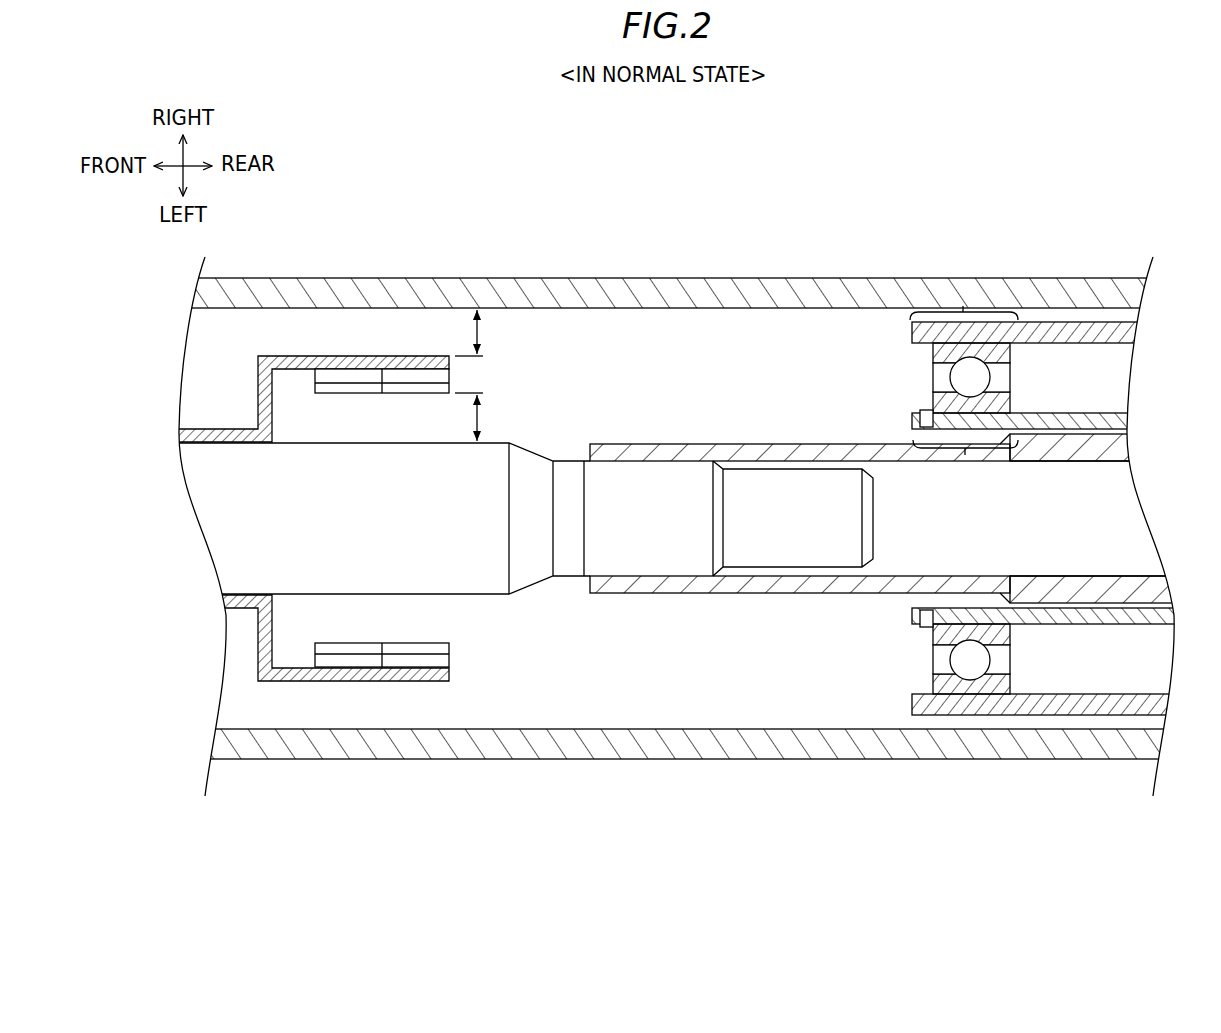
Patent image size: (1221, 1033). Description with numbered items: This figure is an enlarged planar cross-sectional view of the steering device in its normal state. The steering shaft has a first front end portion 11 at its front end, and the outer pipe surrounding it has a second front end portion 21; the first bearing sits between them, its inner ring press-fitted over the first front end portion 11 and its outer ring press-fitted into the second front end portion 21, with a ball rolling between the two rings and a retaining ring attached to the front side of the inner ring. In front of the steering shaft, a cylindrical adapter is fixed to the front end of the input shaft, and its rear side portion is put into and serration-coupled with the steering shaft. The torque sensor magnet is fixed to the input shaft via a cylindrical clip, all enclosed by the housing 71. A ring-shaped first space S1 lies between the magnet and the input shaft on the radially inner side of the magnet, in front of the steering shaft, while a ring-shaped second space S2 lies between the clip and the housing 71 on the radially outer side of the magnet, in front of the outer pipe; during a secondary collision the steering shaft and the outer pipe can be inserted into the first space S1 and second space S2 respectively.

The first front end portion 11 is at (965, 452).
The second front end portion 21 is at (963, 308).
The housing 71 is at (654, 284).
The first space S1 is at (483, 417).
The second space S2 is at (483, 333).